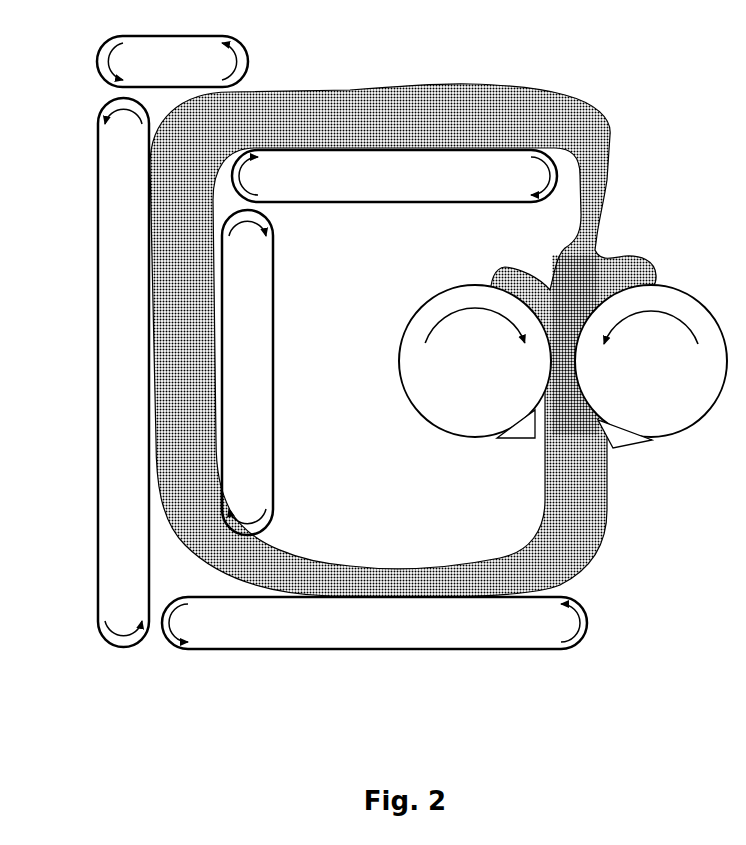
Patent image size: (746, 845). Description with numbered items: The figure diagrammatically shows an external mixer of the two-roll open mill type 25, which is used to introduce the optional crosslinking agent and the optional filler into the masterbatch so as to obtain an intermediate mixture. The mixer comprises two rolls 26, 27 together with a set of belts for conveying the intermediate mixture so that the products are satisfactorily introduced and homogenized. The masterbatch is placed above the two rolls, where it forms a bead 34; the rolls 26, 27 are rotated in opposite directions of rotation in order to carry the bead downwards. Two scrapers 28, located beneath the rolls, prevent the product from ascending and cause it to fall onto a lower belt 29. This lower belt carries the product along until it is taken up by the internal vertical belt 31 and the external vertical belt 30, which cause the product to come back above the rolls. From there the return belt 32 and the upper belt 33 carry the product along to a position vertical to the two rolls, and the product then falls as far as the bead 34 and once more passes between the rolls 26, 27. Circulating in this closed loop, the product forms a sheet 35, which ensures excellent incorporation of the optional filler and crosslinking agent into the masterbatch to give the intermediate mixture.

The external mixer of the two-roll open mill type 25 is at (377, 363).
The roll 26 is at (413, 340).
The roll 27 is at (699, 318).
The scraper 28 is at (527, 428).
The lower belt 29 is at (467, 642).
The external vertical belt 30 is at (98, 368).
The internal vertical belt 31 is at (273, 387).
The return belt 32 is at (100, 53).
The upper belt 33 is at (411, 205).
The bead 34 is at (577, 303).
The sheet 35 is at (467, 107).